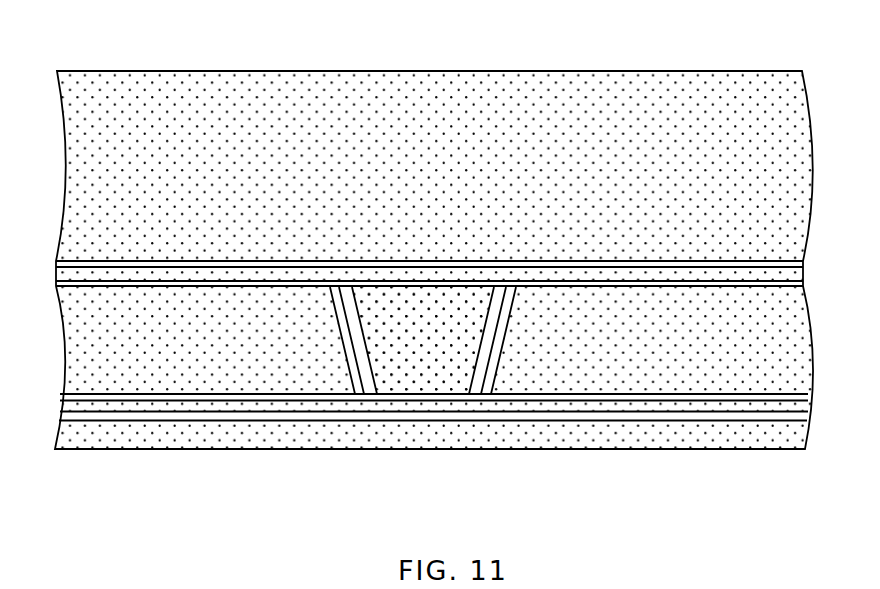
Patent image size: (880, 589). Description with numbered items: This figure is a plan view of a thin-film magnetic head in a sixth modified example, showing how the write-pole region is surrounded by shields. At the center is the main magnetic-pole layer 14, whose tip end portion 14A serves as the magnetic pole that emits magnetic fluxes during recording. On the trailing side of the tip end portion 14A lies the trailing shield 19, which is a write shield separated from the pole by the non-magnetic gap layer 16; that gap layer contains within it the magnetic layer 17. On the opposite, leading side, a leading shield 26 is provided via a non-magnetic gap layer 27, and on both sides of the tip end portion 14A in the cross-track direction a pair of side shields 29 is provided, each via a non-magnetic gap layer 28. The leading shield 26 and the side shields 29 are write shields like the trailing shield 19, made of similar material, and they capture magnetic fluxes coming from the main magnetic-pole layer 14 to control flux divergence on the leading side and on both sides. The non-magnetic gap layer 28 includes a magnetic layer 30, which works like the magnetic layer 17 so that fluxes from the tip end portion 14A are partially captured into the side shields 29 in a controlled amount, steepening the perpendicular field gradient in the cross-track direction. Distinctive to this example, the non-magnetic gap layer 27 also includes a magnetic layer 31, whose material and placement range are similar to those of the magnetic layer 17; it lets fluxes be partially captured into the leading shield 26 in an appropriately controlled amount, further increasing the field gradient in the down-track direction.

The main magnetic-pole layer 14 is at (423, 376).
The tip end portion 14A is at (423, 464).
The non-magnetic gap layer 16 is at (620, 283).
The magnetic layer 17 is at (707, 273).
The trailing shield 19 is at (154, 84).
The leading shield 26 is at (148, 433).
The non-magnetic gap layer 27 is at (220, 418).
The non-magnetic gap layer 28 is at (337, 296).
The side shields 29 is at (245, 305).
The magnetic layer 30 is at (373, 390).
The magnetic layer 31 is at (660, 407).